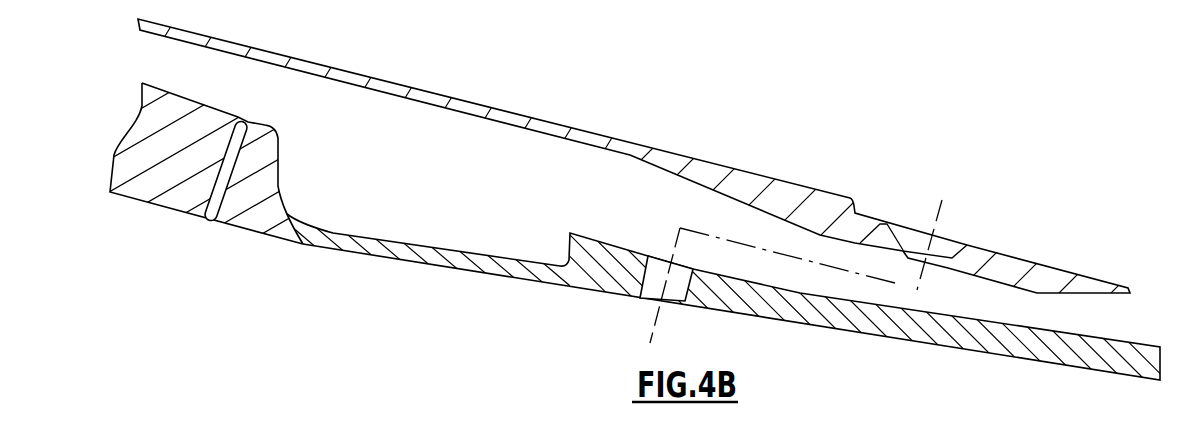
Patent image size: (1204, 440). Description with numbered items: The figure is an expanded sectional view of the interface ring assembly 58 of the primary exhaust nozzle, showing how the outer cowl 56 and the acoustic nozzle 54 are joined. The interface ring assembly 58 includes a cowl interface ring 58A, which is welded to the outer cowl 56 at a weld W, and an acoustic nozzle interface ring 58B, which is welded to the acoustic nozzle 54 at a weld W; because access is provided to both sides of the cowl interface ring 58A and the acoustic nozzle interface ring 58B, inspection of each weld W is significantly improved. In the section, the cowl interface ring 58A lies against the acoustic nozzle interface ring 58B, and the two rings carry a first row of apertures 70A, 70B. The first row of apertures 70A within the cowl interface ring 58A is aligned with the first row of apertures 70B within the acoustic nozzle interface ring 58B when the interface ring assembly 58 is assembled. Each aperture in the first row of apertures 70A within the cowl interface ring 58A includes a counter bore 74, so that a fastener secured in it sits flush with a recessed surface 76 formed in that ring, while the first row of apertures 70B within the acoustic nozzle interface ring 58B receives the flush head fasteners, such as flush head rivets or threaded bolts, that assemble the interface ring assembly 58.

The acoustic nozzle 54 is at (165, 203).
The weld W is at (240, 117).
The outer cowl 56 is at (640, 143).
The interface ring assembly 58 is at (949, 175).
The cowl interface ring 58A is at (750, 174).
The acoustic nozzle interface ring 58B is at (810, 324).
The first row of apertures 70A is at (980, 258).
The first row of apertures 70B is at (690, 301).
The counter bore 74 is at (963, 250).
The recessed surface 76 is at (1034, 262).